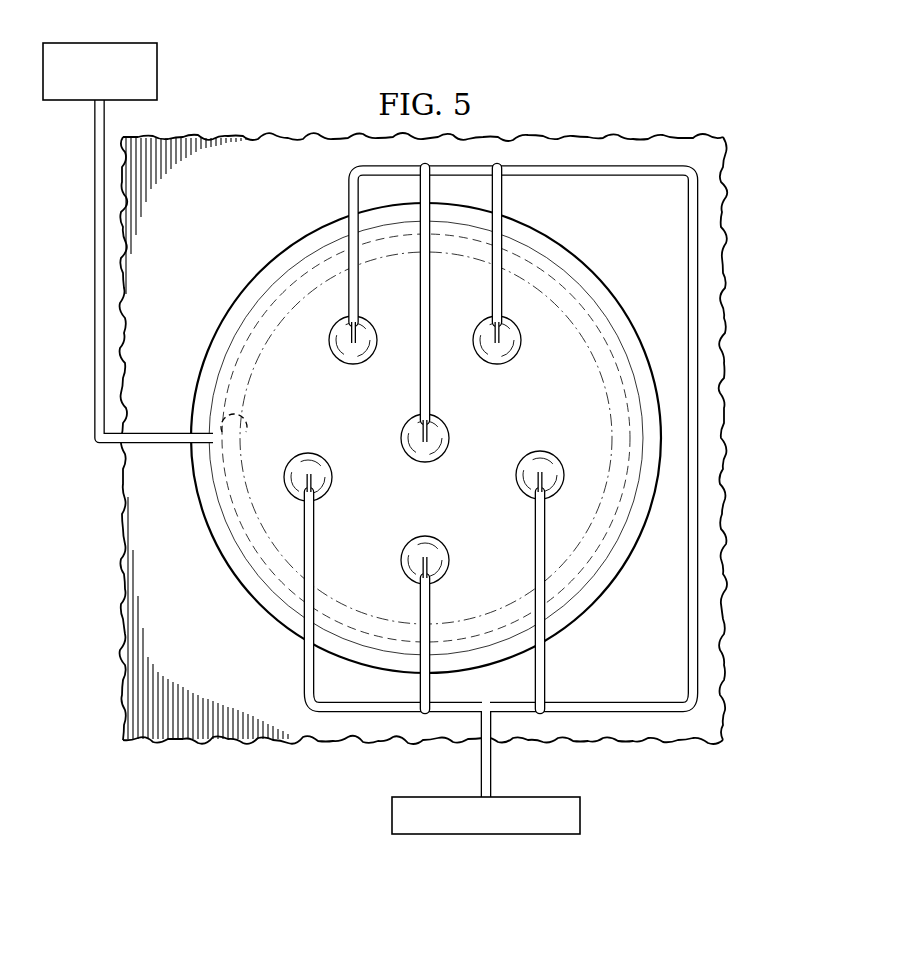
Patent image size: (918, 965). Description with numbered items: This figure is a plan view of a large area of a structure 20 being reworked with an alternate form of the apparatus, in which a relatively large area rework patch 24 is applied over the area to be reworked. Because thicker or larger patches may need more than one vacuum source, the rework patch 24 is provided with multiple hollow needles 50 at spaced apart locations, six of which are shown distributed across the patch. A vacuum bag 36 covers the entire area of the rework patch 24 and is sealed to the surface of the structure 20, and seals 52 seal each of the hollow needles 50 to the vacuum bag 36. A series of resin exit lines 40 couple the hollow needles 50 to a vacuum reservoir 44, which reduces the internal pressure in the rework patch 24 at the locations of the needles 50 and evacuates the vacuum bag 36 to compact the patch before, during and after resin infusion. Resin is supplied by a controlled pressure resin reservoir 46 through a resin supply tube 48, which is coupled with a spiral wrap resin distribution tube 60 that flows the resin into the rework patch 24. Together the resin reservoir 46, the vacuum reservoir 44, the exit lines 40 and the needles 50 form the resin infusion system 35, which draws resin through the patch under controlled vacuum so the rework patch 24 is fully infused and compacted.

The structure 20 is at (256, 135).
The rework patch 24 is at (248, 422).
The resin infusion system 35 is at (498, 156).
The vacuum bag 36 is at (260, 272).
The resin exit lines 40 is at (349, 196).
The vacuum reservoir 44 is at (581, 815).
The resin reservoir 46 is at (88, 43).
The resin supply tube 48 is at (95, 260).
The hollow needles 50 is at (334, 349).
The seals 52 is at (353, 364).
The spiral wrap resin distribution tube 60 is at (583, 282).